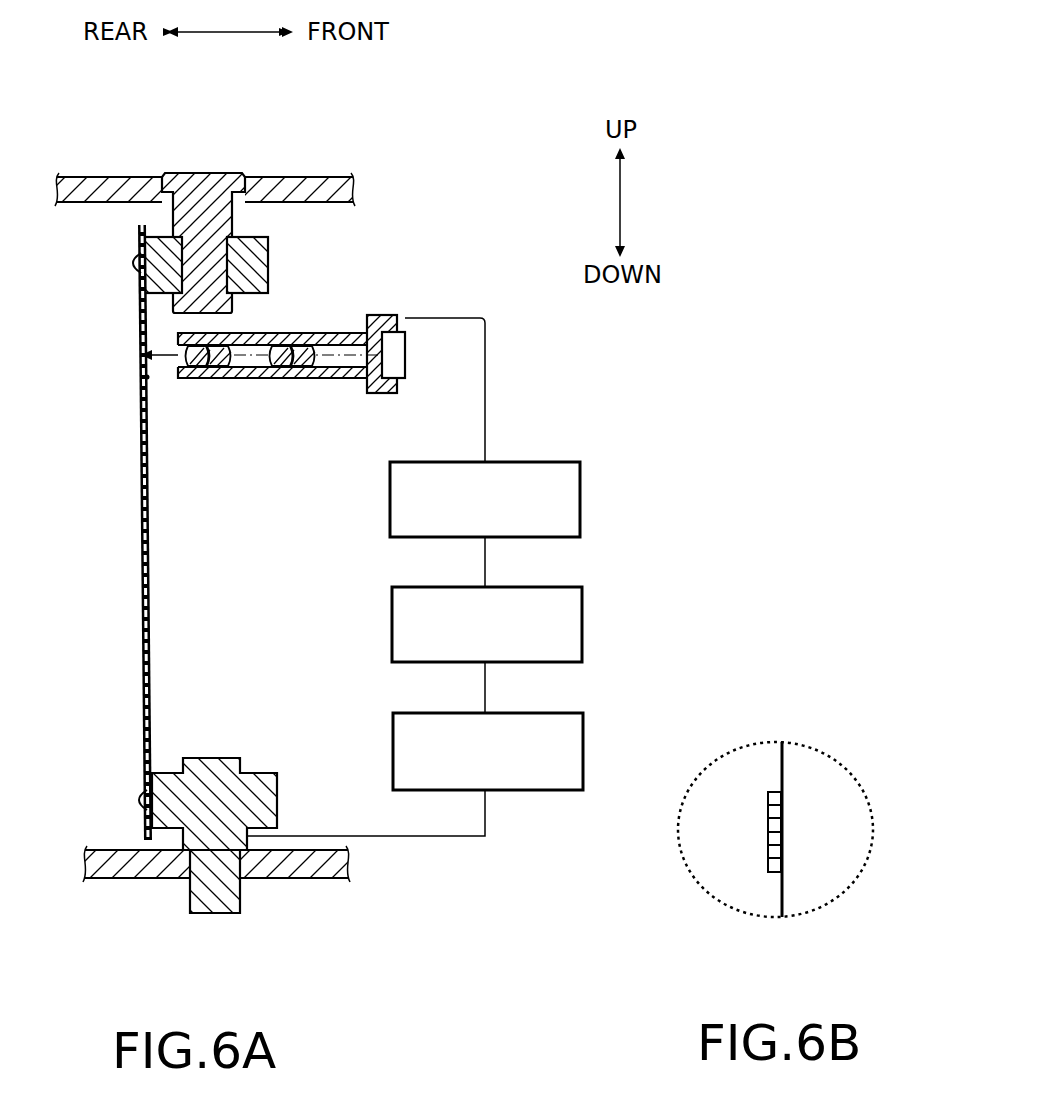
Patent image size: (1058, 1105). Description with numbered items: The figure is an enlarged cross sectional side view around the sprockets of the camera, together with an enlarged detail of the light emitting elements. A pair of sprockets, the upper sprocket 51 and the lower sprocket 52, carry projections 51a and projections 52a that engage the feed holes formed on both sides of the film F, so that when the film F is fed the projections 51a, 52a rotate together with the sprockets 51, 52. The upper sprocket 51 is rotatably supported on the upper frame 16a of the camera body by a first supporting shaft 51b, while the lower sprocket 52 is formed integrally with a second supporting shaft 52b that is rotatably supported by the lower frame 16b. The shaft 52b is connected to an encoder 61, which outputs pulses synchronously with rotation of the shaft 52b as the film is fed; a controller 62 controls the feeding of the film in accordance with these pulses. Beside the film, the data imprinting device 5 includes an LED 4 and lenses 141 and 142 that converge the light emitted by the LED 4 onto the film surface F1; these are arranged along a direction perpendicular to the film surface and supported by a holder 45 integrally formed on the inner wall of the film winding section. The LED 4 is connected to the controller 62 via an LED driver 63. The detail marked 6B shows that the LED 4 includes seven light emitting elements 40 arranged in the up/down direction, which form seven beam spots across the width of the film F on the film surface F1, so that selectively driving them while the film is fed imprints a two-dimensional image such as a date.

In FIG. 6A, the LED 4 is at (405, 355).
In FIG. 6B, the LED 4 is at (780, 762).
In FIG. 6A, the data imprinting device 5 is at (417, 311).
In FIG. 6B, the light emitting elements 40 is at (757, 788).
In FIG. 6A, the holder 45 is at (352, 380).
In FIG. 6A, the upper sprocket 51 is at (268, 272).
In FIG. 6A, the projections 51a is at (128, 264).
In FIG. 6A, the first supporting shaft 51b is at (197, 181).
In FIG. 6A, the lower sprocket 52 is at (277, 797).
In FIG. 6A, the projections 52a is at (138, 799).
In FIG. 6A, the second supporting shaft 52b is at (218, 895).
In FIG. 6A, the encoder 61 is at (583, 742).
In FIG. 6A, the controller 62 is at (582, 615).
In FIG. 6A, the LED driver 63 is at (580, 489).
In FIG. 6A, the lens 141 is at (288, 367).
In FIG. 6A, the lens 142 is at (206, 367).
In FIG. 6A, the upper frame 16a is at (312, 180).
In FIG. 6A, the lower frame 16b is at (298, 878).
In FIG. 6A, the film F is at (142, 562).
In FIG. 6A, the film surface F1 is at (142, 386).
In FIG. 6A, the detail view region of FIG. 6B is at (390, 355).